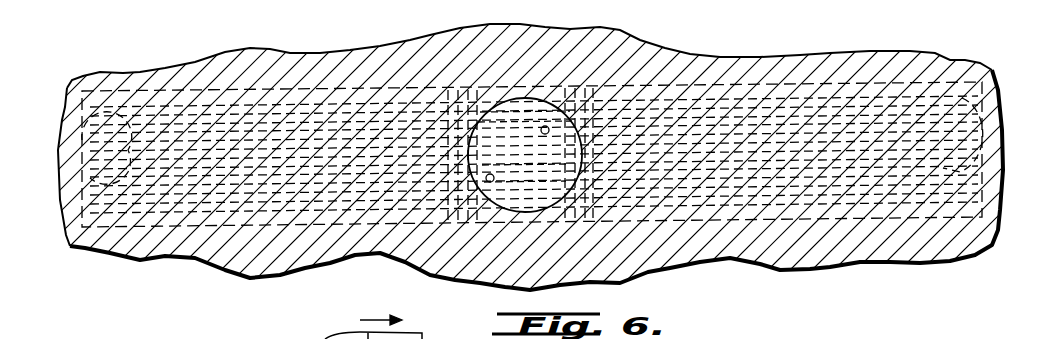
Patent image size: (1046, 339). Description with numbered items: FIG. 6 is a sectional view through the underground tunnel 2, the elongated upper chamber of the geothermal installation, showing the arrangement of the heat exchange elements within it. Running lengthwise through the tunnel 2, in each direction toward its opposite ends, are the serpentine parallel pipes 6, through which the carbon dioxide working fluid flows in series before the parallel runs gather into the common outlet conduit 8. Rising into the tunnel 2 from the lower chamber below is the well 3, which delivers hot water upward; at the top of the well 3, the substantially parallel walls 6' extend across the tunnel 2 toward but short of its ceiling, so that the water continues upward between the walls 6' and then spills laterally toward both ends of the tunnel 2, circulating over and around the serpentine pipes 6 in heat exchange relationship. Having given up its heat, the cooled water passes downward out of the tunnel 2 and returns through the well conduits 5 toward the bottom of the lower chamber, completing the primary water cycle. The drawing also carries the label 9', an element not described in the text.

The tunnel 2 is at (249, 90).
The well 3 is at (545, 145).
The well conduits 5 is at (965, 125).
The serpentine pipes 6 is at (530, 163).
The walls 6' is at (525, 91).
The common outlet conduit 8 is at (444, 92).
The connecting member 9' is at (381, 313).